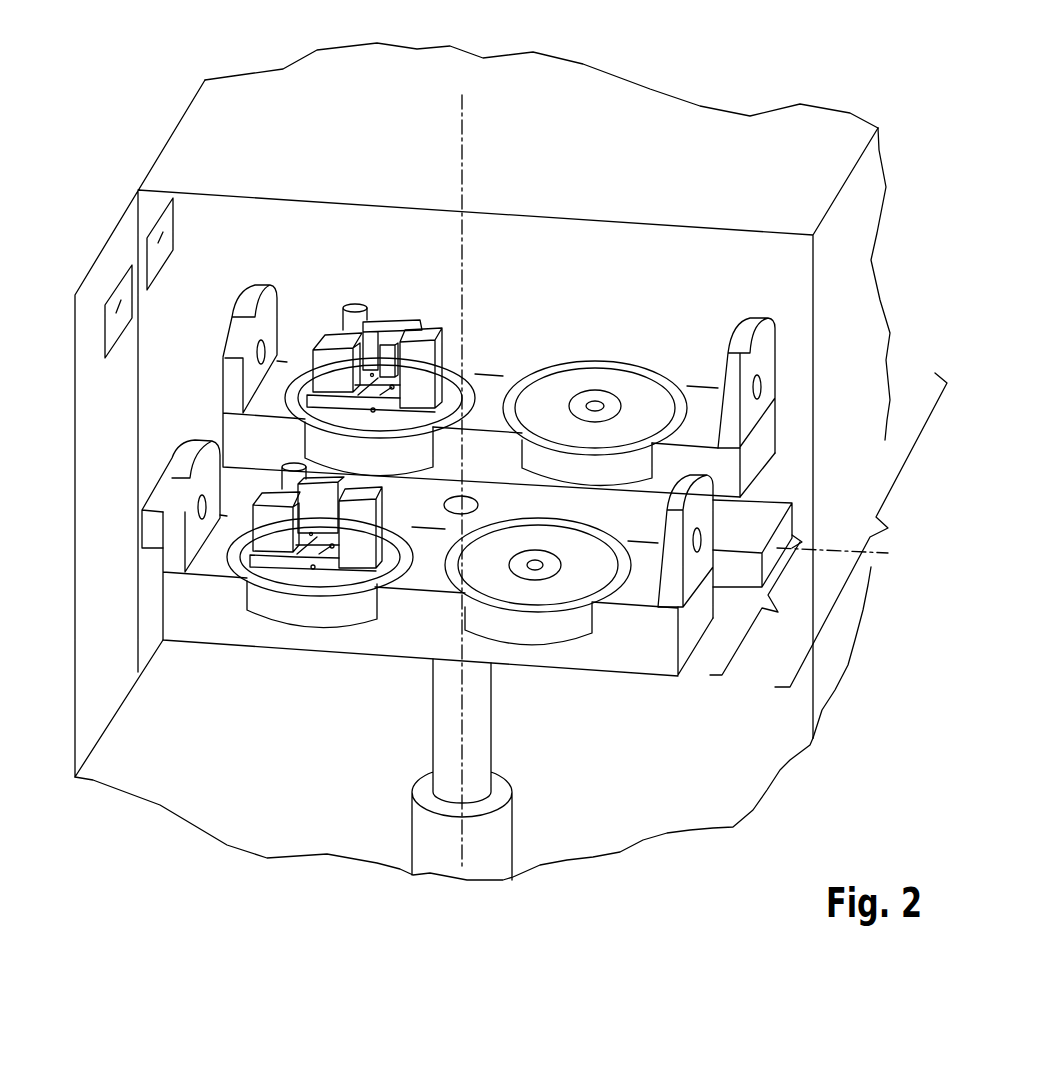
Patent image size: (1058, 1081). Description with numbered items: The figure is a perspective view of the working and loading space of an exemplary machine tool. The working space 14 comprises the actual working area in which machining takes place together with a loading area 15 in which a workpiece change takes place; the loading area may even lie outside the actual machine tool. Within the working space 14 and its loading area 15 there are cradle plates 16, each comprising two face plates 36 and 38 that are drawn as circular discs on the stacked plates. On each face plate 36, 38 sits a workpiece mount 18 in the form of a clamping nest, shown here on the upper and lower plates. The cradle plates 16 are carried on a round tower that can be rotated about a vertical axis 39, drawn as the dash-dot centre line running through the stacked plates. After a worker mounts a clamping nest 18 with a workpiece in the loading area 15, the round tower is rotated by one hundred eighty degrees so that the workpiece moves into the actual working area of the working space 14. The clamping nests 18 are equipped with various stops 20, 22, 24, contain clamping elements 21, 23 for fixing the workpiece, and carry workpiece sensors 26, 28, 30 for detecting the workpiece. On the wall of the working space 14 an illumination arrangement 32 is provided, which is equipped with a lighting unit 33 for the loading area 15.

The working space 14 is at (861, 530).
The loading area 15 is at (761, 608).
The cradle plate 16 is at (478, 647).
The workpiece mount 18 is at (445, 350).
The stop 20 is at (328, 337).
The clamping element 21 is at (412, 332).
The stop 22 is at (398, 322).
The clamping element 23 is at (355, 309).
The stop 24 is at (438, 328).
The workpiece sensor 26 is at (373, 410).
The workpiece sensor 28 is at (392, 387).
The workpiece sensor 30 is at (371, 326).
The illumination arrangement 32 is at (165, 233).
The lighting unit 33 is at (123, 277).
The face plate 36 is at (472, 368).
The face plate 38 is at (603, 382).
The vertical axis 39 is at (463, 108).